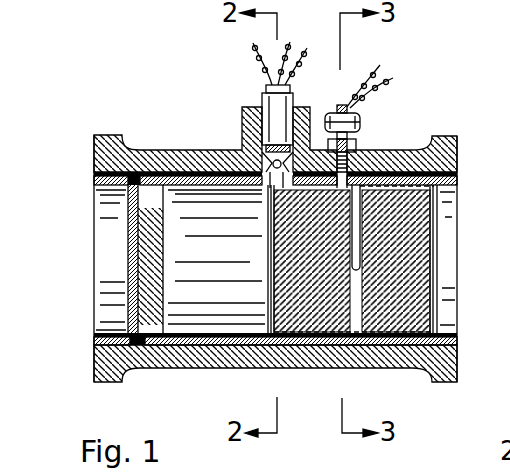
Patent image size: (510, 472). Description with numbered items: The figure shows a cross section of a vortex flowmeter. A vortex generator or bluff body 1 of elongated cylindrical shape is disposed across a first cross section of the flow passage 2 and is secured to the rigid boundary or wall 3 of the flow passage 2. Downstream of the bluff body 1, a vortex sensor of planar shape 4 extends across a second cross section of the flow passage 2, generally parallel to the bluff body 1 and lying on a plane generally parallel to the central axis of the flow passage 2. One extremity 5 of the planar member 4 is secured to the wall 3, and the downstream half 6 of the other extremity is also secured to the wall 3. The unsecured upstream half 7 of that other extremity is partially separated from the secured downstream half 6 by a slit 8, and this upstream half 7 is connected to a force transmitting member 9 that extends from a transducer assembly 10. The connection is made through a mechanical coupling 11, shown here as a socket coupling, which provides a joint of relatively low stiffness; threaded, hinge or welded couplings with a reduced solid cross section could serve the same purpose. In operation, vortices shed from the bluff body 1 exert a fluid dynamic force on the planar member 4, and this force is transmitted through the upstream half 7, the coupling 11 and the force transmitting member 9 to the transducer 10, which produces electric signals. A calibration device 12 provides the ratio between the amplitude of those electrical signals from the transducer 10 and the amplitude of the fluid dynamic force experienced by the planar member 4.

The vortex generator or bluff body 1 is at (148, 261).
The flow passage 2 is at (211, 273).
The rigid boundary or wall 3 is at (253, 325).
The vortex sensor of planar shape 4 is at (360, 294).
The one extremity of the planar member 5 is at (338, 333).
The downstream half of the other extremity 6 is at (394, 180).
The unsecured upstream half 7 is at (112, 230).
The slit 8 is at (368, 227).
The force transmitting member 9 is at (264, 198).
The transducer assembly 10 is at (283, 113).
The mechanical coupling 11 is at (268, 228).
The calibration device 12 is at (360, 125).